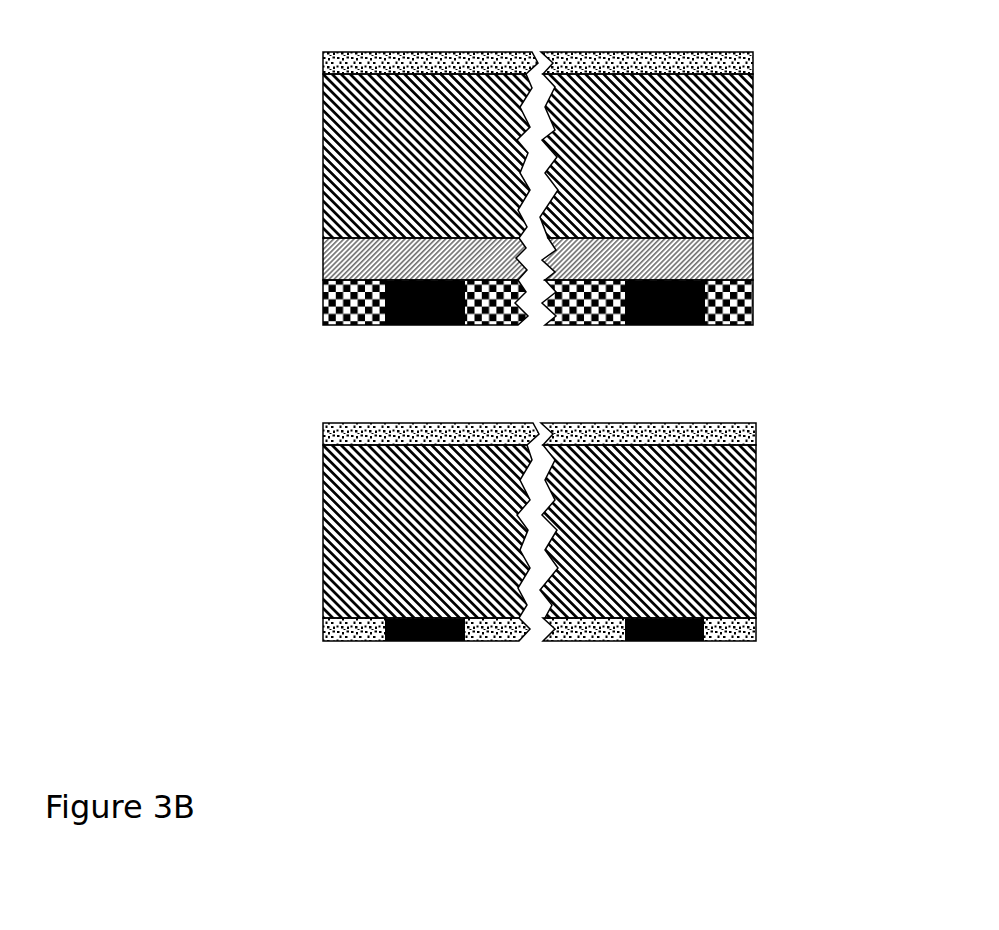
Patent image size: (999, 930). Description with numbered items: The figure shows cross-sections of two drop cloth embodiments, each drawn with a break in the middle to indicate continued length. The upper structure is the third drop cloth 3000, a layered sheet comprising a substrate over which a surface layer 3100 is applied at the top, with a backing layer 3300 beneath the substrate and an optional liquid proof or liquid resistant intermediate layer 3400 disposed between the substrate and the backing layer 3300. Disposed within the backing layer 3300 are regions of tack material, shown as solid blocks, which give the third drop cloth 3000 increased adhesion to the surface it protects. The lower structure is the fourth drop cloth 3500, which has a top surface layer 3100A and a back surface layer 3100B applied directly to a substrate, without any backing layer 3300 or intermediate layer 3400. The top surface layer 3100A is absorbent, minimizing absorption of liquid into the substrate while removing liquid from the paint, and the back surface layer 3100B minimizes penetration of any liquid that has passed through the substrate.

The third drop cloth 3000 is at (534, 203).
The surface layer 3100 is at (762, 47).
The backing layer 3300 is at (767, 307).
The intermediate layer 3400 is at (765, 253).
The fourth drop cloth 3500 is at (542, 571).
The top surface layer 3100A is at (763, 418).
The back surface layer 3100B is at (765, 623).